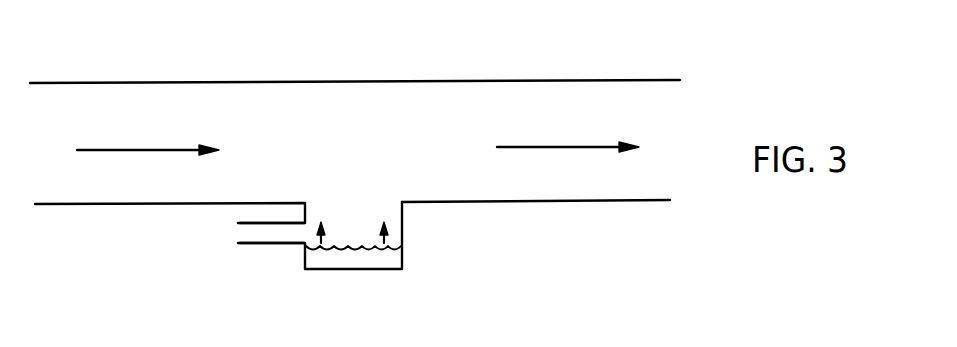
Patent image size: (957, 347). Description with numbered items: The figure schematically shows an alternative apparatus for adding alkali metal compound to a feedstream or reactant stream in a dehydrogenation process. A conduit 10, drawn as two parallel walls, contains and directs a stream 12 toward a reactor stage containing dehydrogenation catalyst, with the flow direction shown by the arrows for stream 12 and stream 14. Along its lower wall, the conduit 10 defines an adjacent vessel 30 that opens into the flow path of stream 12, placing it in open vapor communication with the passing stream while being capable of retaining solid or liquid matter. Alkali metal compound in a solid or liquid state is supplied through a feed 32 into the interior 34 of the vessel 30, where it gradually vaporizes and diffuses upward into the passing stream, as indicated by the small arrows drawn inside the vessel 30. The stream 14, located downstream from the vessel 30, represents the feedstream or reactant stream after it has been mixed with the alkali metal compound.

The conduit 10 is at (240, 81).
The stream 12 is at (134, 150).
The stream 14 is at (553, 147).
The vessel 30 is at (403, 228).
The feed 32 is at (265, 244).
The interior 34 is at (373, 225).